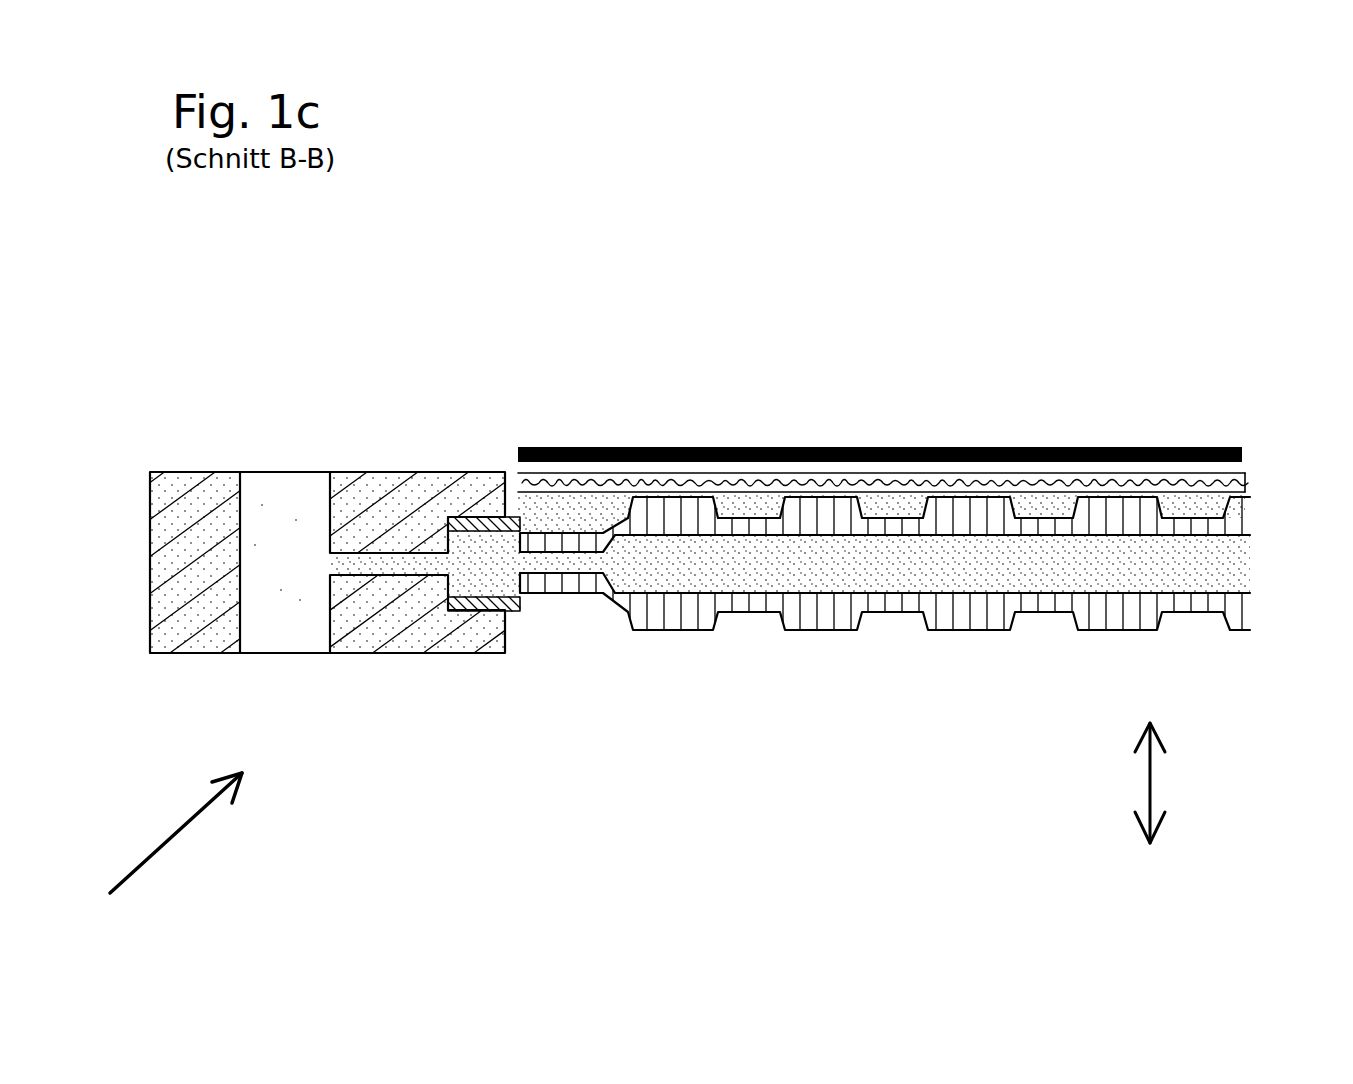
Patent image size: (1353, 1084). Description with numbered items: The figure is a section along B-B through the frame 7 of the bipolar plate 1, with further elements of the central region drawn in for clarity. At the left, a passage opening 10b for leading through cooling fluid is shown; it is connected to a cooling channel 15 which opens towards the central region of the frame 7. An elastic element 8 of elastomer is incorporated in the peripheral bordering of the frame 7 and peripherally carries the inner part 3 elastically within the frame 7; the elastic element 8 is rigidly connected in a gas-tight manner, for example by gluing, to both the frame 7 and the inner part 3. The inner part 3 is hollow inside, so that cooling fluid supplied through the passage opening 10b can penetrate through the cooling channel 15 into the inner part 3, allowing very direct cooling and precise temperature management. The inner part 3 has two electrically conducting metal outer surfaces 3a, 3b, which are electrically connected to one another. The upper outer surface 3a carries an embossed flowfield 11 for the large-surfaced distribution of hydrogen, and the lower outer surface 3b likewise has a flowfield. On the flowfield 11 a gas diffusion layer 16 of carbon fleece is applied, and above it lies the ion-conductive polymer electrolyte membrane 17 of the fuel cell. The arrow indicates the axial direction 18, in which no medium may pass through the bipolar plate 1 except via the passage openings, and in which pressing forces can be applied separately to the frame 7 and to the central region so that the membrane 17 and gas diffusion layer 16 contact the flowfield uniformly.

The bipolar plate 1 is at (164, 847).
The inner part 3 is at (1245, 520).
The outer surface 3a is at (940, 507).
The outer surface 3b is at (683, 612).
The frame 7 is at (193, 557).
The elastic element 8 is at (497, 607).
The passage opening 10b is at (280, 510).
The flowfield 11 is at (670, 512).
The cooling channel 15 is at (344, 558).
The gas diffusion layer 16 is at (740, 493).
The polymer electrolyte membrane 17 is at (770, 447).
The axial direction 18 is at (1150, 778).